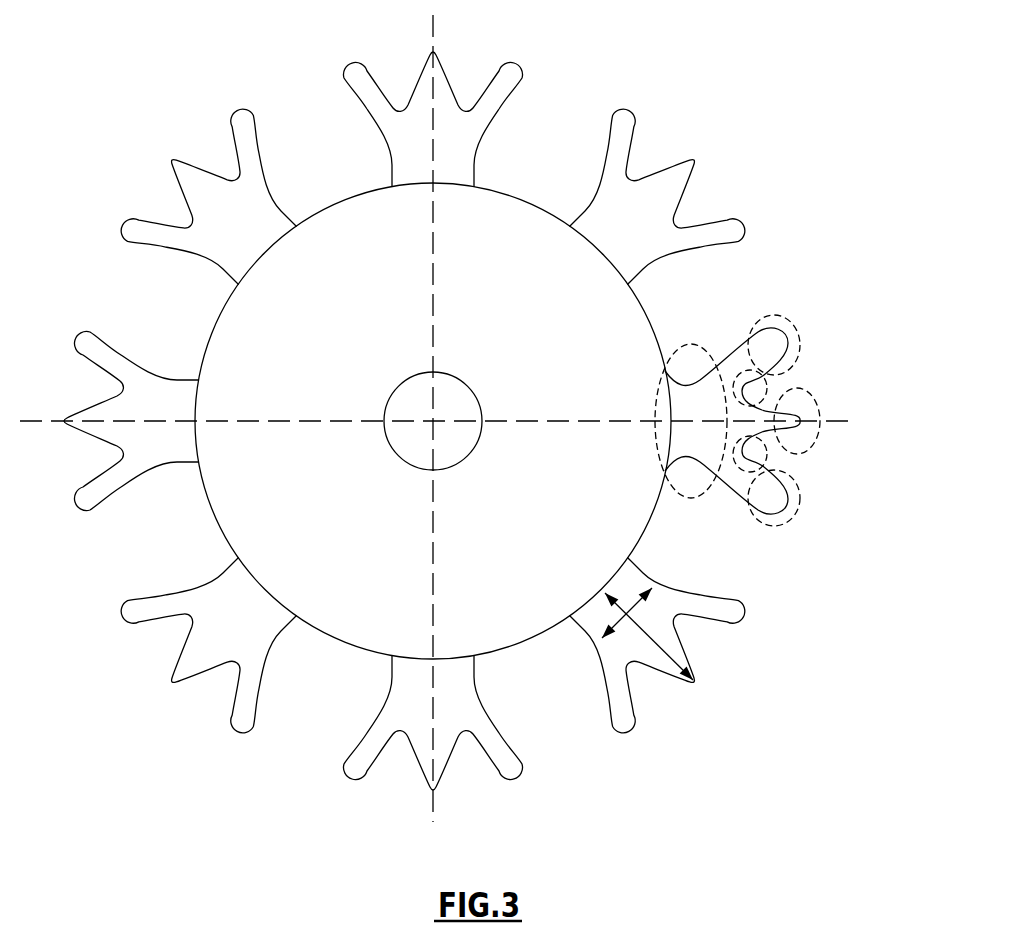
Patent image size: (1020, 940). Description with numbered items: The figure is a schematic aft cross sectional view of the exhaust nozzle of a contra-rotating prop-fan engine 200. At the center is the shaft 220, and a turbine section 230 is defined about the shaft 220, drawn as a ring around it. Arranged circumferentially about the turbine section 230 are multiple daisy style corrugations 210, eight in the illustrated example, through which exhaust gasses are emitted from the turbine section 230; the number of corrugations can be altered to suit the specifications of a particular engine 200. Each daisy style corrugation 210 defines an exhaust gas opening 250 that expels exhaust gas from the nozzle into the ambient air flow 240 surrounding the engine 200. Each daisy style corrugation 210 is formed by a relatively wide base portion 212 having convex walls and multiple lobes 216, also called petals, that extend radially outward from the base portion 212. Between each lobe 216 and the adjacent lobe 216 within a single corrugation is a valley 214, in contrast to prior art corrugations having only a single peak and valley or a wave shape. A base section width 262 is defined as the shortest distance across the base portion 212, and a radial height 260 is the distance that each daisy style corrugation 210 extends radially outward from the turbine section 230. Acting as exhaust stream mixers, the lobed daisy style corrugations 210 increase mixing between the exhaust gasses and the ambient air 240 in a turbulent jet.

The engine 200 is at (841, 180).
The daisy style corrugations 210 is at (667, 204).
The base portion 212 is at (692, 496).
The valley 214 is at (765, 381).
The lobes 216 is at (790, 328).
The shaft 220 is at (410, 400).
The turbine section 230 is at (362, 220).
The ambient air flow 240 is at (543, 127).
The exhaust gas opening 250 is at (418, 110).
The radial height 260 is at (673, 658).
The base section width 262 is at (596, 592).